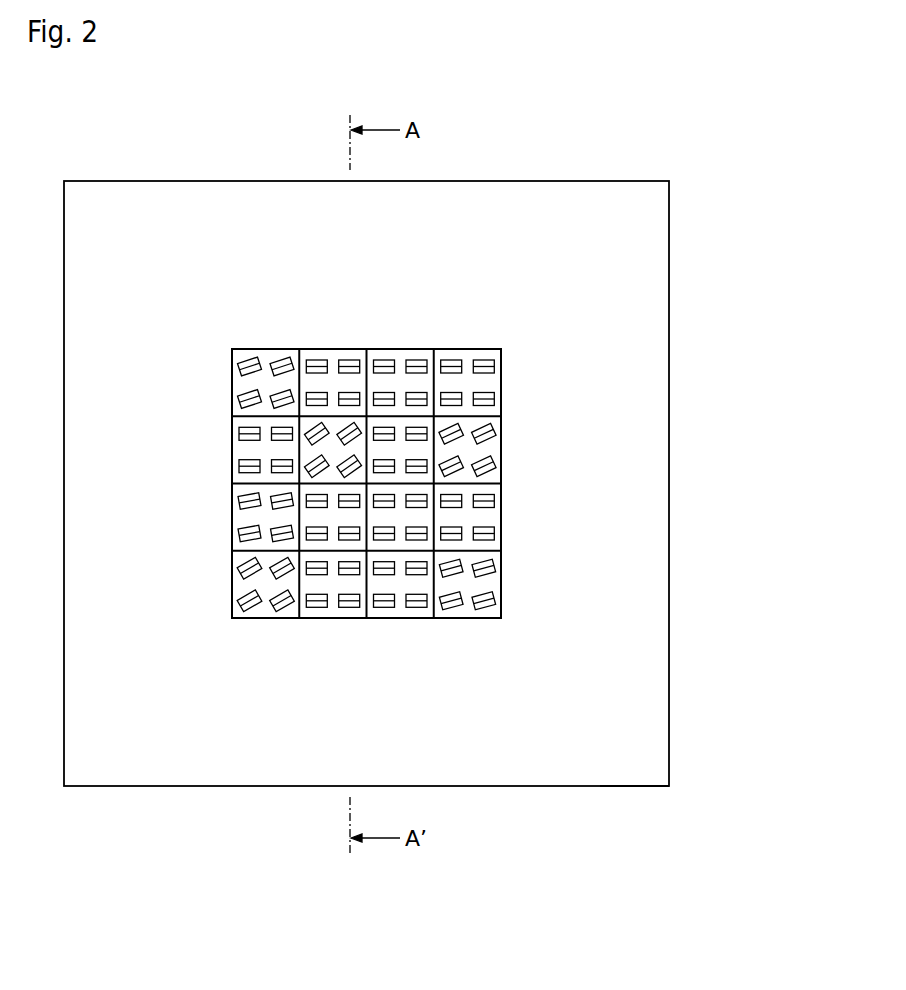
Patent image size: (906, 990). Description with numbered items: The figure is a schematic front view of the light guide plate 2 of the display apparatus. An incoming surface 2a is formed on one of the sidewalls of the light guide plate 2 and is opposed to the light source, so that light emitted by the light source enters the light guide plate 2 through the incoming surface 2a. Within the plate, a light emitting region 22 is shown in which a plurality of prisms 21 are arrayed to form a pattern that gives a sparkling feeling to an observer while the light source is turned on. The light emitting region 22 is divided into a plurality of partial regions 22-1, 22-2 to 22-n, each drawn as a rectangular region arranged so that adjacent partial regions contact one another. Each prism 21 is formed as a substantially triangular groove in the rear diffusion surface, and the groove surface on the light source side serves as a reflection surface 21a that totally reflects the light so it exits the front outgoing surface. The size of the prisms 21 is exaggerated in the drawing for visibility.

The light guide plate 2 is at (719, 713).
The incoming surface 2a is at (632, 786).
The prism 21 is at (261, 617).
The reflection surface 21a is at (276, 607).
The light emitting region 22 is at (503, 583).
The partial region 22-1 is at (275, 358).
The partial region 22-2 is at (333, 356).
The partial region 22-n is at (470, 614).